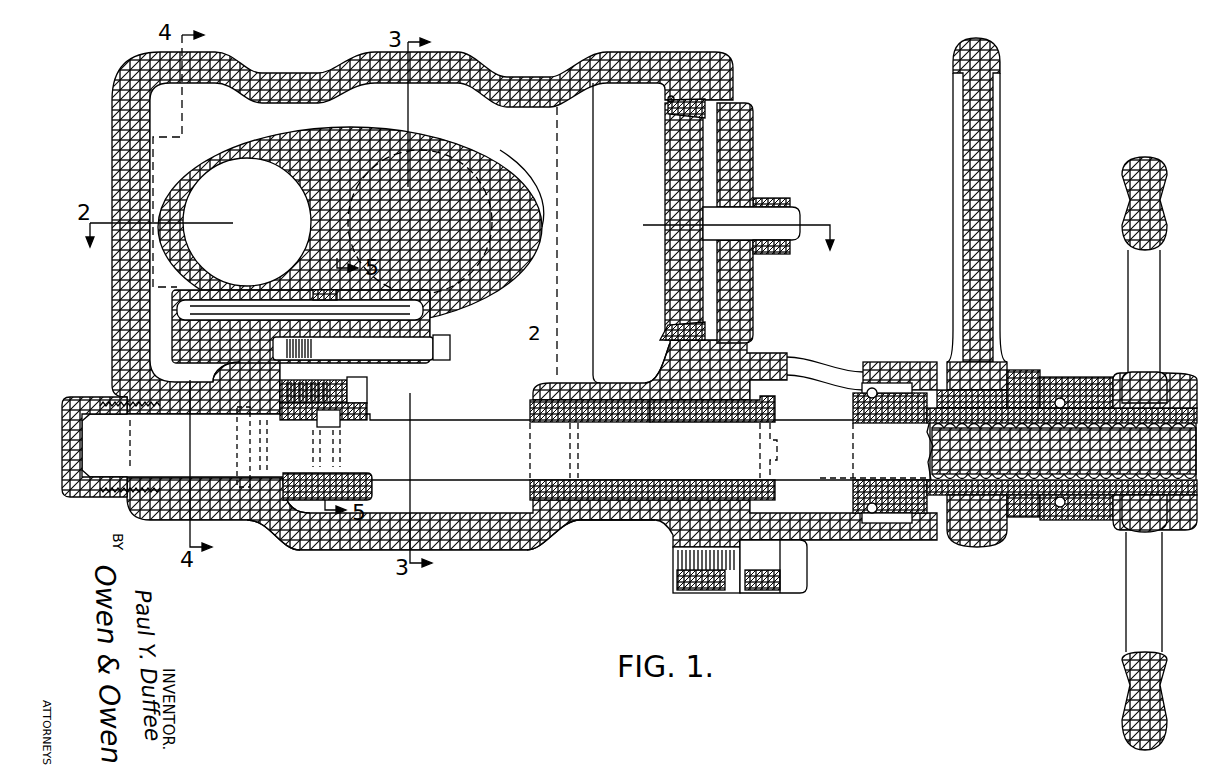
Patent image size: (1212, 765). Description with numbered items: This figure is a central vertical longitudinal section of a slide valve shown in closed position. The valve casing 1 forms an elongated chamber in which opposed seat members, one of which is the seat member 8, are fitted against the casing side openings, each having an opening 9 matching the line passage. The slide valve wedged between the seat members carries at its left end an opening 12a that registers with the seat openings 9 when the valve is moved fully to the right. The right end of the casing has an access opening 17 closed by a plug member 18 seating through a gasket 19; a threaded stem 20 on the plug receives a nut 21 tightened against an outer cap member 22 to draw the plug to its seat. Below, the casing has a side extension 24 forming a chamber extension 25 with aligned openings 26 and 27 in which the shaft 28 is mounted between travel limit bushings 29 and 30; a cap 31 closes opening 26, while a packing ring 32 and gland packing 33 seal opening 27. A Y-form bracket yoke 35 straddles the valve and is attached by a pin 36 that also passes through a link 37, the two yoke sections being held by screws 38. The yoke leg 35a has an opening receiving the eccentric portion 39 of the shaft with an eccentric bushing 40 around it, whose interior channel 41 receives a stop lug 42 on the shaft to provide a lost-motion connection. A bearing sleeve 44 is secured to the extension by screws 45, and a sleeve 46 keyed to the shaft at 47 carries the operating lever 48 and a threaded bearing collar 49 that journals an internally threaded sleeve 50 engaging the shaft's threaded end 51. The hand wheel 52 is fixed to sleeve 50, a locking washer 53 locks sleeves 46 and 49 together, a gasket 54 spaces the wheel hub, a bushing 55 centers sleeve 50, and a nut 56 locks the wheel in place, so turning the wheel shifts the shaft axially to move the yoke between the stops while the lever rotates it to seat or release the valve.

The valve casing 1 is at (543, 80).
The valve seat member 8 is at (522, 176).
The seat member opening 9 is at (484, 173).
The valve opening 12a is at (247, 222).
The casing access opening 17 is at (668, 103).
The plug member 18 is at (668, 183).
The gasket 19 is at (668, 337).
The threaded stem 20 is at (776, 253).
The nut 21 is at (342, 135).
The outer cap member 22 is at (755, 161).
The casing side extension 24 is at (275, 548).
The valve chamber extension 25 is at (532, 445).
The shaft opening 26 is at (172, 495).
The shaft opening 27 is at (610, 522).
The shaft 28 is at (506, 447).
The travel limit bushing 29 is at (252, 522).
The travel limit bushing 30 is at (535, 405).
The cap 31 is at (85, 498).
The packing ring 32 is at (776, 410).
The gland packing 33 is at (630, 392).
The bracket yoke 35 is at (175, 337).
The yoke leg 35a is at (235, 373).
The pin 36 is at (432, 328).
The link 37 is at (320, 291).
The screws 38 is at (368, 388).
The eccentric portion 39 is at (356, 448).
The eccentric bushing 40 is at (368, 492).
The channel 41 is at (248, 487).
The stop lug 42 is at (340, 426).
The bearing sleeve 44 is at (903, 346).
The screws 45 is at (808, 580).
The sleeve 46 is at (973, 388).
The key 47 is at (905, 482).
The operating lever 48 is at (987, 284).
The bearing collar 49 is at (1082, 378).
The internally threaded sleeve 50 is at (1058, 505).
The threaded end portion 51 is at (972, 522).
The hand wheel 52 is at (1128, 241).
The locking washer 53 is at (1013, 540).
The gasket 54 is at (1098, 530).
The bushing 55 is at (1032, 395).
The nut 56 is at (1172, 392).